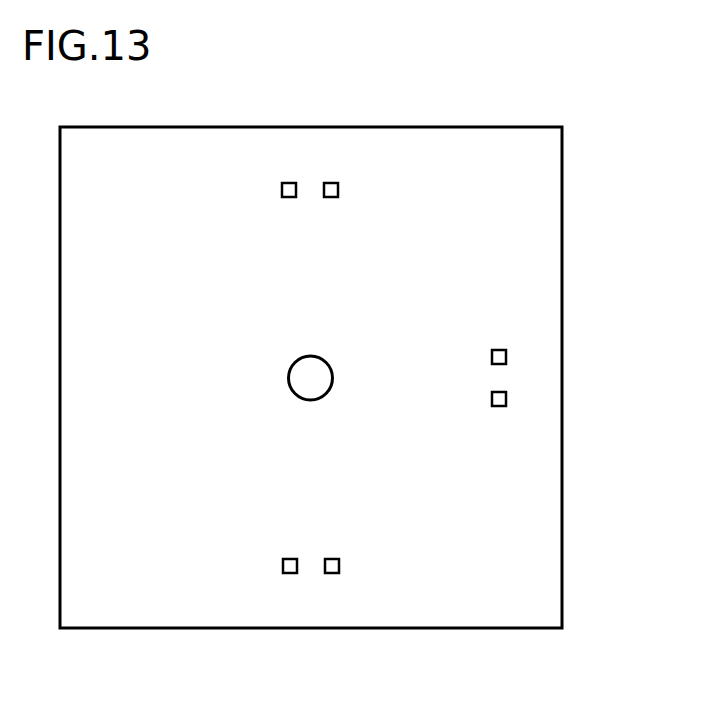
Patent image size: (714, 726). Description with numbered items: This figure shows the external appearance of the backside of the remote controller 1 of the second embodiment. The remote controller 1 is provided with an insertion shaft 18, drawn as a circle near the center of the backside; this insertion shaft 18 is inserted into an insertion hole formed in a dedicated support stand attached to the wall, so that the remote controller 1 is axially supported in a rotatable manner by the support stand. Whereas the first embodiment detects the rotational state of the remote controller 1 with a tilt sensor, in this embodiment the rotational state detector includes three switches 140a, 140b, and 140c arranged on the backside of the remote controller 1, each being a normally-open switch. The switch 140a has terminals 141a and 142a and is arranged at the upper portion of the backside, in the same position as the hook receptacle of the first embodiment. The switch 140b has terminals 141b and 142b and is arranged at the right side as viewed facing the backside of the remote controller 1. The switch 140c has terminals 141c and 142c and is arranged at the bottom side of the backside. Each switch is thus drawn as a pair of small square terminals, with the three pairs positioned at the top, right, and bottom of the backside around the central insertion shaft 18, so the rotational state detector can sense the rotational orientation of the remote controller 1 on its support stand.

The remote controller 1 is at (492, 127).
The insertion shaft 18 is at (313, 356).
The switch 140a is at (312, 172).
The terminal 141a is at (289, 198).
The terminal 142a is at (331, 198).
The switch 140b is at (524, 358).
The terminal 141b is at (491, 353).
The terminal 142b is at (491, 401).
The switch 140c is at (308, 595).
The terminal 141c is at (290, 558).
The terminal 142c is at (332, 558).